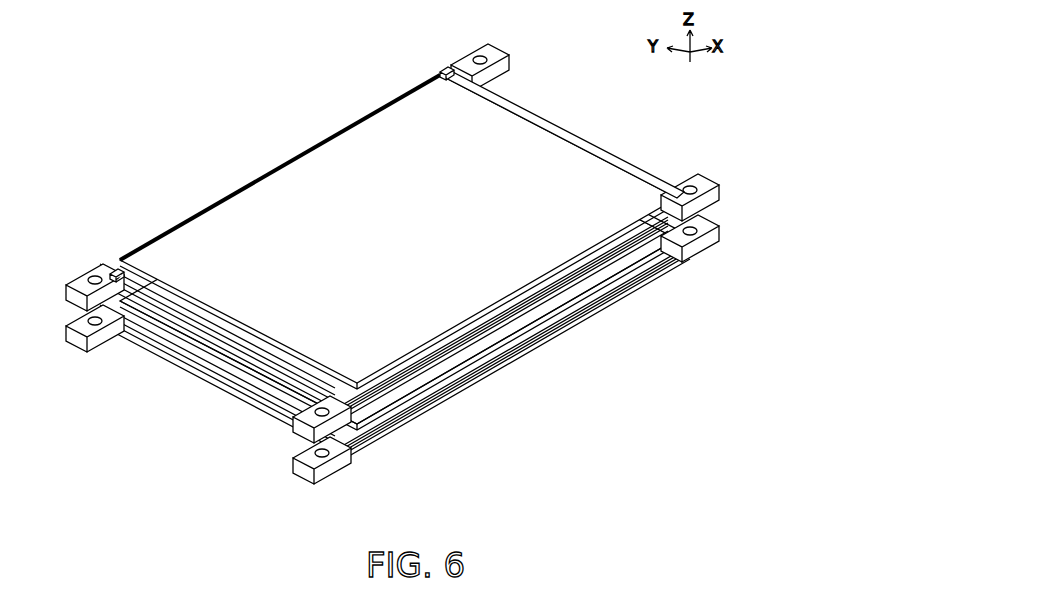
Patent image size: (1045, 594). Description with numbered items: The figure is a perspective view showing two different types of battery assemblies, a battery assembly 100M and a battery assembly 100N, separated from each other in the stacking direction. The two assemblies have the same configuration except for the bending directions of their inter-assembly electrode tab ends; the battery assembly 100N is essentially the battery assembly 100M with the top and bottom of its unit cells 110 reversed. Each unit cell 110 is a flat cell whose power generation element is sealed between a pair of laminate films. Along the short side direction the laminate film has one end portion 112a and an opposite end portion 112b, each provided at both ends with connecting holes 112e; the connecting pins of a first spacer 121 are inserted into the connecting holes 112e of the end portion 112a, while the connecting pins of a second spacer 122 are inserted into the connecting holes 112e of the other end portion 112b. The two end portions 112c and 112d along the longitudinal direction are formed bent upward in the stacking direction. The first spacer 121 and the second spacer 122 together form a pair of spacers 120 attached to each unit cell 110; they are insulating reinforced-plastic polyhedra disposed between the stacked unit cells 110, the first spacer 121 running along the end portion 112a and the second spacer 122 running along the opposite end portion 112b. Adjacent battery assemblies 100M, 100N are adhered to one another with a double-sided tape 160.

The battery assembly 100M is at (392, 243).
The battery assembly 100N is at (216, 417).
The unit cell 110 is at (386, 247).
The end portion 112a is at (167, 368).
The end portion 112b is at (563, 129).
The end portion 112c is at (545, 312).
The end portion 112d is at (228, 192).
The connecting hole 112e is at (440, 71).
The spacer 120 is at (399, 364).
The first spacer 121 is at (347, 472).
The second spacer 122 is at (709, 250).
The double-sided tape 160 is at (393, 147).